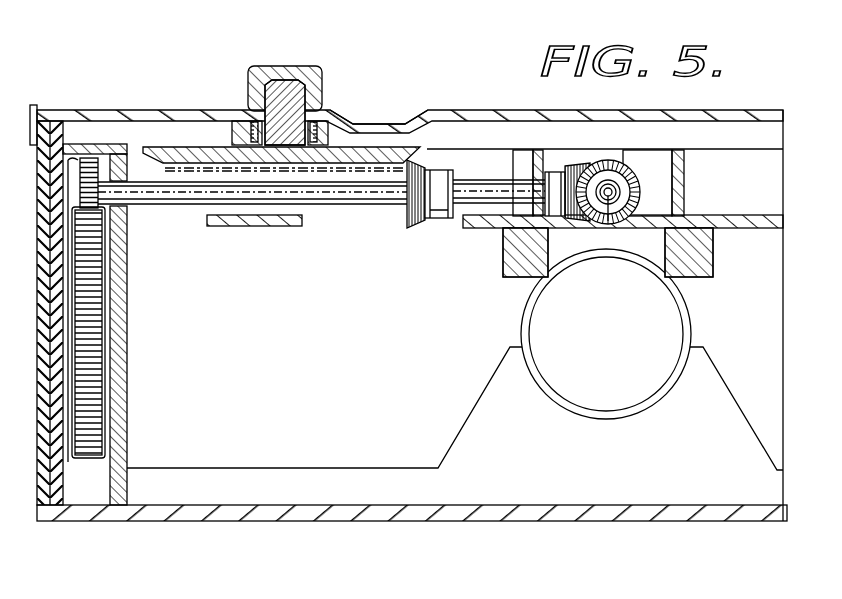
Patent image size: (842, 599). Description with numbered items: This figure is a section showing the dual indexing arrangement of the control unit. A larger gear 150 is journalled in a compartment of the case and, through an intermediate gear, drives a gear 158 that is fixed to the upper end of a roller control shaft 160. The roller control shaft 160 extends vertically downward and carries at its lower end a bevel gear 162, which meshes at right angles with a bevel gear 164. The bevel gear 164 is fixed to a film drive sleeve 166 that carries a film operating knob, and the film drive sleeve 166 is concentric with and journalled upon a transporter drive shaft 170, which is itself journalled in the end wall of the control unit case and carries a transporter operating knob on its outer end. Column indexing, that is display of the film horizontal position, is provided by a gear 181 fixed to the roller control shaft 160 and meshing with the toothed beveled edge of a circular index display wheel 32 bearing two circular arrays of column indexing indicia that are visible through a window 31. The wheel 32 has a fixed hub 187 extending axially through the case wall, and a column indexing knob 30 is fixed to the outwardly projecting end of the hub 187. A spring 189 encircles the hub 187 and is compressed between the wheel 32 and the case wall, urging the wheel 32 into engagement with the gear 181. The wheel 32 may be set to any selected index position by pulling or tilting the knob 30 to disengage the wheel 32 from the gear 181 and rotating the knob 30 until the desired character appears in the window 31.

The column indexing knob 30 is at (266, 66).
The fixed hub 187 is at (289, 84).
The window 31 is at (364, 131).
The spring 189 is at (247, 131).
The circular index display wheel 32 is at (412, 158).
The roller control shaft 160 is at (378, 208).
The gear 181 is at (408, 218).
The bevel gear 162 is at (590, 163).
The bevel gear 164 is at (630, 168).
The film drive sleeve 166 is at (598, 222).
The transporter drive shaft 170 is at (609, 224).
The gear 158 is at (104, 217).
The larger gear 150 is at (104, 314).